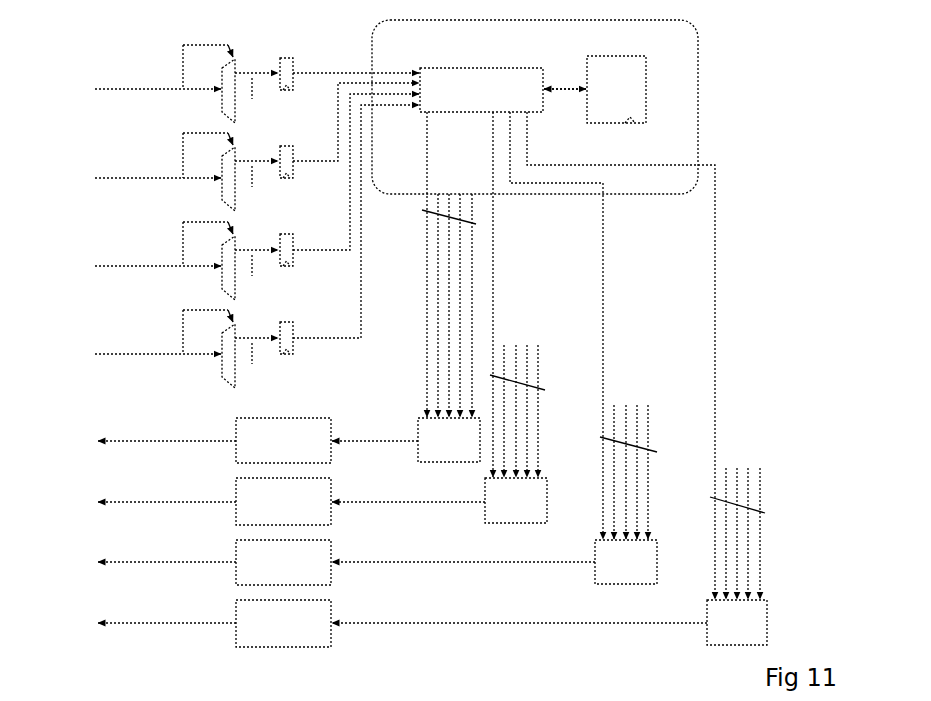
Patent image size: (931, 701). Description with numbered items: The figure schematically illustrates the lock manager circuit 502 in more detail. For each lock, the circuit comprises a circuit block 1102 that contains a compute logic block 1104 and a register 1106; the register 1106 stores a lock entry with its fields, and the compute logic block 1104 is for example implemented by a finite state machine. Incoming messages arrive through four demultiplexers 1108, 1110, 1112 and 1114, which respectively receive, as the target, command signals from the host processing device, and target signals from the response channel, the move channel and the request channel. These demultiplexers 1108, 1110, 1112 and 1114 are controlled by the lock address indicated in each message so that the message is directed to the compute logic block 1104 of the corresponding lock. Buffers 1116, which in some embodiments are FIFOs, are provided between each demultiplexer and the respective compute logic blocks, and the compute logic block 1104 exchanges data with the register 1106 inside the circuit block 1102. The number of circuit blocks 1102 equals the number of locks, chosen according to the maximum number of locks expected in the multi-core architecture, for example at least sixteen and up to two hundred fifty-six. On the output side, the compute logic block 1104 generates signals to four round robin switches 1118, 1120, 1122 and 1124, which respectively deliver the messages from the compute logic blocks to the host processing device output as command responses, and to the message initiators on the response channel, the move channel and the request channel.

The lock manager circuit 502 is at (770, 125).
The circuit block 1102 is at (680, 70).
The compute logic block 1104 is at (487, 67).
The register 1106 is at (632, 57).
The demultiplexer 1108 is at (236, 66).
The demultiplexer 1110 is at (236, 154).
The demultiplexer 1112 is at (236, 243).
The demultiplexer 1114 is at (236, 331).
The buffer 1116 is at (291, 60).
The round robin switch 1118 is at (428, 463).
The round robin switch 1120 is at (497, 524).
The round robin switch 1122 is at (613, 585).
The round robin switch 1124 is at (723, 646).